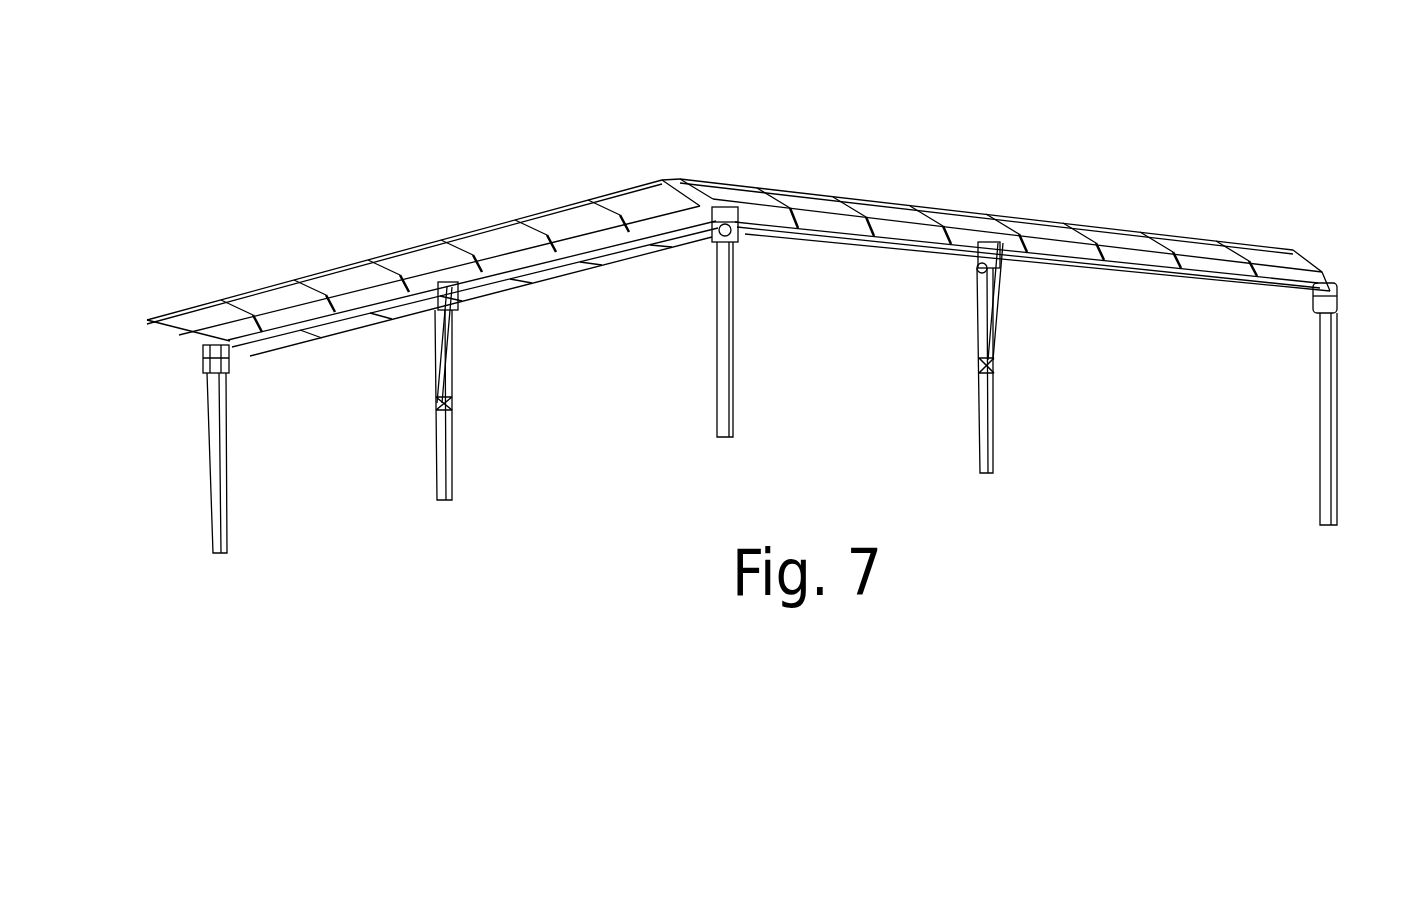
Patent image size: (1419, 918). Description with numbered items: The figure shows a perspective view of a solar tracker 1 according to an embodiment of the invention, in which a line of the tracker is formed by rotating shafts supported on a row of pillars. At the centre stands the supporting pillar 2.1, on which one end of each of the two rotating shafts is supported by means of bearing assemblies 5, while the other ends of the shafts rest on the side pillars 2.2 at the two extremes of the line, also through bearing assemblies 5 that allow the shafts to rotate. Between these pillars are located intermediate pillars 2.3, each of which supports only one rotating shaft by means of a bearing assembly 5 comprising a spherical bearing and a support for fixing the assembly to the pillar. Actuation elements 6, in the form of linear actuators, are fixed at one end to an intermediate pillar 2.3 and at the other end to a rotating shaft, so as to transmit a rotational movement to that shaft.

The solar tracker 1 is at (306, 203).
The supporting pillar 2.1 is at (718, 360).
The side pillar 2.2 is at (218, 490).
The intermediate pillar 2.3 is at (438, 457).
The bearing assembly 5 is at (1329, 276).
The actuation element 6 is at (433, 358).